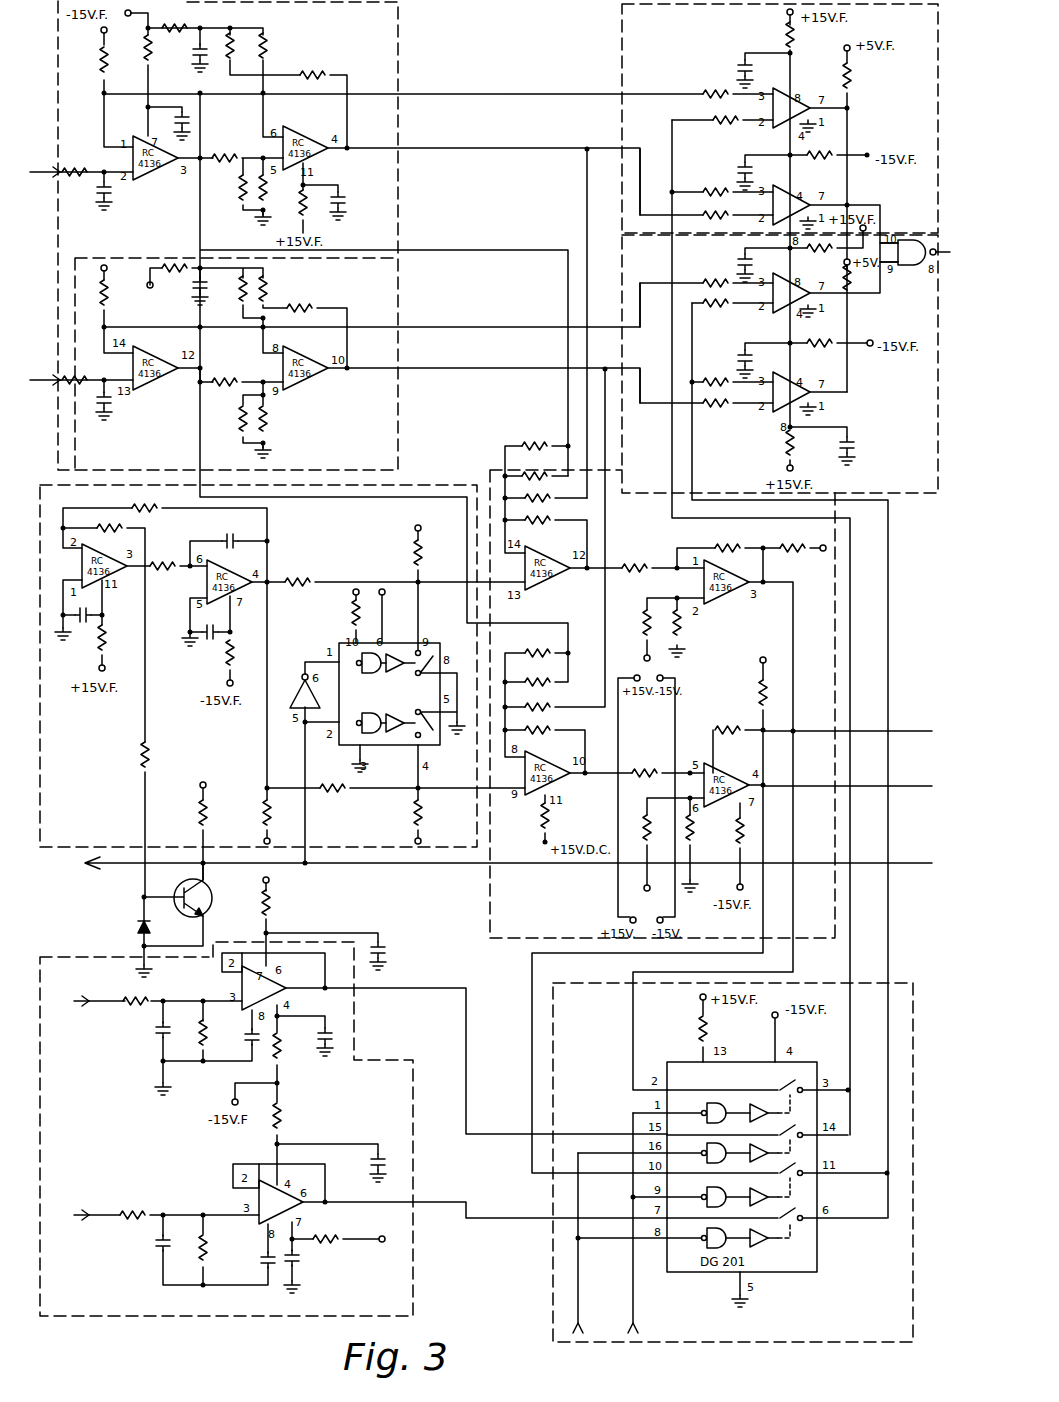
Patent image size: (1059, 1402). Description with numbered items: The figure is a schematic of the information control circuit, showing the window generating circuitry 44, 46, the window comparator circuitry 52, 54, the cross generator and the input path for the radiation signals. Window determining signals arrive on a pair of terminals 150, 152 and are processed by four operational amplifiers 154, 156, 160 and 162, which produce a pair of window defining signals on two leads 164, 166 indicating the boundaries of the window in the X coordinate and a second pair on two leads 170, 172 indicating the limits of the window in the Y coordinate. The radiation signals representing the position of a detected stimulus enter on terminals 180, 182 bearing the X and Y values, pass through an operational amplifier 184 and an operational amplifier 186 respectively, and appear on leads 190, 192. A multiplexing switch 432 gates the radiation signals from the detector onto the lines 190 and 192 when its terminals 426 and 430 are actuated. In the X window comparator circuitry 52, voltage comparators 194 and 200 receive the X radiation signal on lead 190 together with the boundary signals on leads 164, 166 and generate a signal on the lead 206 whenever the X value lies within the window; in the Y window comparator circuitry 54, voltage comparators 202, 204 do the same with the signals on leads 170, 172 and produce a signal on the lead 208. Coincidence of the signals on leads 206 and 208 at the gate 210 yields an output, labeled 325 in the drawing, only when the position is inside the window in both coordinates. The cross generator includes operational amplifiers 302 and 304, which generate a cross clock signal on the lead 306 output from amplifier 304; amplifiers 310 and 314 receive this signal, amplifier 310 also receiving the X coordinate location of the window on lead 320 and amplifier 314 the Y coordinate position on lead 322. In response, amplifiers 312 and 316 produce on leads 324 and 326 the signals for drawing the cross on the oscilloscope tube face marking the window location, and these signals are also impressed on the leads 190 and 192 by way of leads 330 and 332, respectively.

The window generating circuitry 44 is at (398, 207).
The window generating circuitry 46 is at (398, 410).
The window comparator circuitry 52 is at (622, 27).
The Y window comparator circuitry 54 is at (622, 270).
The terminal 150 is at (52, 166).
The terminal 152 is at (52, 374).
The operational amplifier 154 is at (150, 178).
The operational amplifier 156 is at (292, 135).
The operational amplifier 160 is at (152, 388).
The operational amplifier 162 is at (302, 388).
The lead 164 is at (468, 94).
The lead 166 is at (418, 148).
The lead 170 is at (460, 327).
The lead 172 is at (468, 369).
The voltage comparator 194 is at (804, 98).
The voltage comparator 200 is at (804, 198).
The voltage comparator 202 is at (803, 288).
The voltage comparator 204 is at (804, 386).
The lead 206 is at (868, 222).
The lead 208 is at (868, 296).
The coincidence gate 210 is at (894, 272).
The gate output line 325 is at (950, 252).
The lead 320 is at (587, 186).
The lead 322 is at (612, 452).
The lead 330 is at (793, 913).
The operational amplifier 302 is at (114, 588).
The operational amplifier 304 is at (250, 570).
The lead 306 is at (326, 582).
The operational amplifier 310 is at (540, 560).
The operational amplifier 312 is at (716, 606).
The operational amplifier 314 is at (540, 765).
The operational amplifier 316 is at (724, 772).
The lead 324 is at (897, 731).
The lead 326 is at (902, 786).
The lead 332 is at (766, 856).
The terminal 180 is at (92, 1001).
The terminal 182 is at (92, 1215).
The operational amplifier 184 is at (252, 972).
The operational amplifier 186 is at (268, 1184).
The lead 190 is at (850, 1028).
The lead 192 is at (885, 1078).
The multiplexing switch 432 is at (818, 1244).
The terminal 426 is at (580, 1292).
The terminal 430 is at (633, 1298).